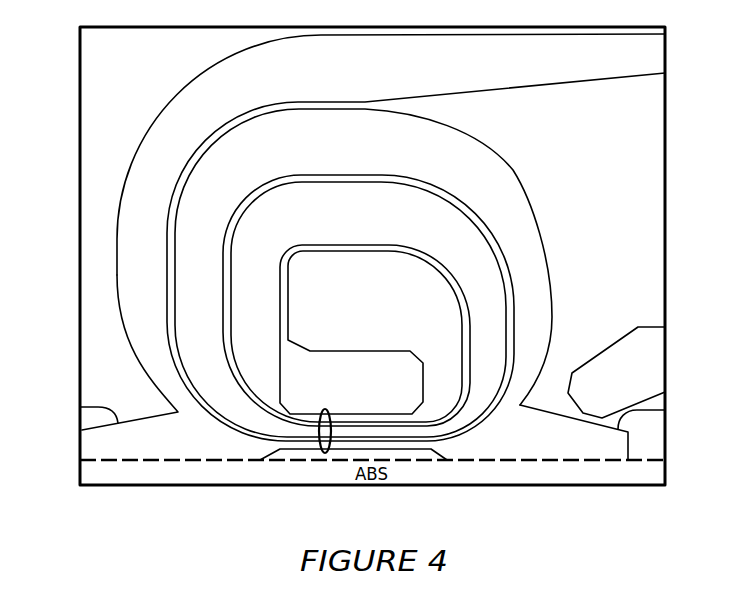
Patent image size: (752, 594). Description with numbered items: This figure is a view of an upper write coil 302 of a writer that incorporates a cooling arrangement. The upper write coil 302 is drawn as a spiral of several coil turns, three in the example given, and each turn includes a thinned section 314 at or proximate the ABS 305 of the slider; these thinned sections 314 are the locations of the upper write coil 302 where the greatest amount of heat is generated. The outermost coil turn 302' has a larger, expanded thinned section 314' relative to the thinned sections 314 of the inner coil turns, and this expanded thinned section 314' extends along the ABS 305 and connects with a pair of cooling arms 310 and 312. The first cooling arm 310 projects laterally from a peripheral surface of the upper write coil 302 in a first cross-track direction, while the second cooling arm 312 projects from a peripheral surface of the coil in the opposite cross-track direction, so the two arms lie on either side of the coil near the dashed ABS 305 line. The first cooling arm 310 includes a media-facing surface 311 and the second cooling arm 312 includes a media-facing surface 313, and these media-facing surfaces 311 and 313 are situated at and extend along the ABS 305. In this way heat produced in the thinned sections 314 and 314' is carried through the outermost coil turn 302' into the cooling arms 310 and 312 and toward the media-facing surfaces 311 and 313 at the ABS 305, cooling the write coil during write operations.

The upper write coil 302 is at (391, 237).
The outermost coil turn 302' is at (537, 469).
The ABS 305 is at (642, 463).
The first cooling arm 310 is at (80, 407).
The media-facing surface 311 is at (218, 466).
The second cooling arm 312 is at (665, 410).
The media-facing surface 313 is at (573, 463).
The thinned section 314 is at (323, 471).
The thinned section 314' is at (353, 491).